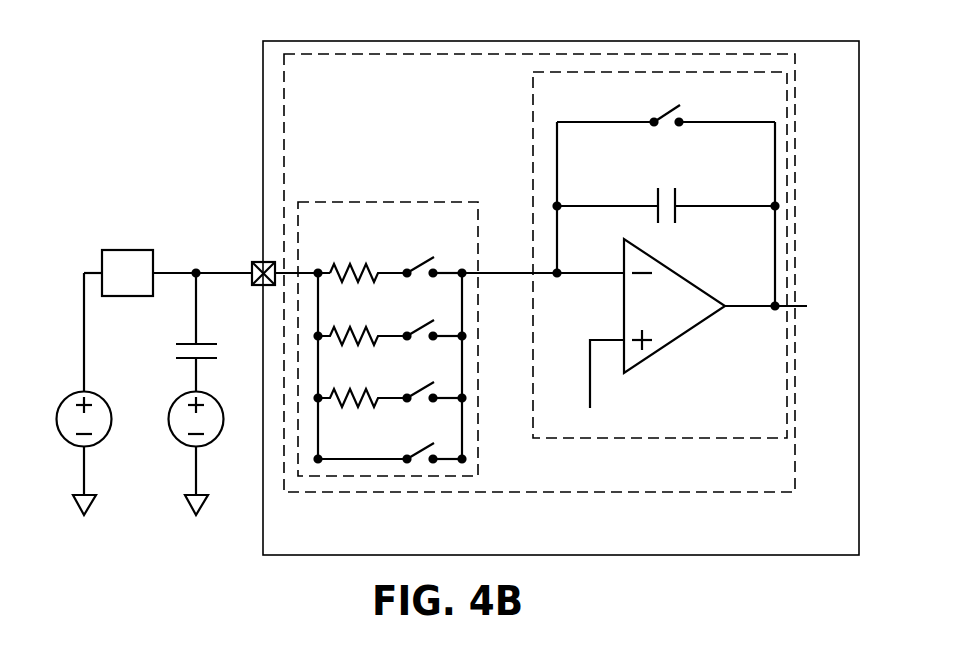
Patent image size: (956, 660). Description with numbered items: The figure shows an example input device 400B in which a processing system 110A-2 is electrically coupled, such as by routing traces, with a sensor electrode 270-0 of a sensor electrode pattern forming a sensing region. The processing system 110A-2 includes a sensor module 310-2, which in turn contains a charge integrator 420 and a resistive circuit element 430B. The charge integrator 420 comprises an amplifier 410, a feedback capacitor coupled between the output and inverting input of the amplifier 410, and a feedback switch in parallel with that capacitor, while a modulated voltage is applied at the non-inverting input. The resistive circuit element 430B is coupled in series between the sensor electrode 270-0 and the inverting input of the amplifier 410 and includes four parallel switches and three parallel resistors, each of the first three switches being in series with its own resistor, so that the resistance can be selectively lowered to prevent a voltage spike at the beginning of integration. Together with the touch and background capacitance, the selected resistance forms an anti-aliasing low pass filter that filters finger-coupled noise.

The input device 400B is at (97, 68).
The sensor electrode 270-0 is at (102, 258).
The sensor module 310-2 is at (284, 135).
The resistive circuit element 430B is at (427, 202).
The charge integrator 420 is at (533, 163).
The amplifier 410 is at (663, 348).
The processing system 110A-2 is at (799, 540).